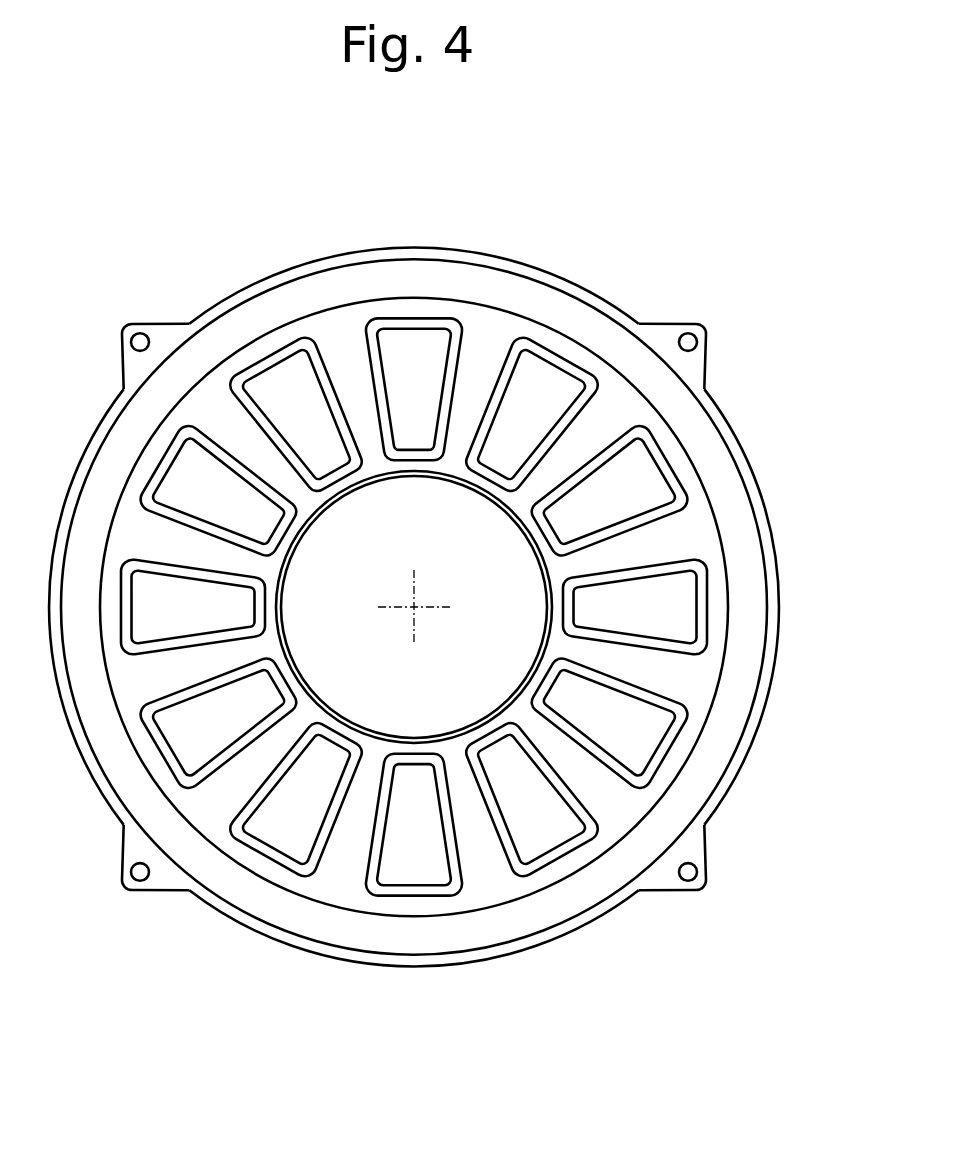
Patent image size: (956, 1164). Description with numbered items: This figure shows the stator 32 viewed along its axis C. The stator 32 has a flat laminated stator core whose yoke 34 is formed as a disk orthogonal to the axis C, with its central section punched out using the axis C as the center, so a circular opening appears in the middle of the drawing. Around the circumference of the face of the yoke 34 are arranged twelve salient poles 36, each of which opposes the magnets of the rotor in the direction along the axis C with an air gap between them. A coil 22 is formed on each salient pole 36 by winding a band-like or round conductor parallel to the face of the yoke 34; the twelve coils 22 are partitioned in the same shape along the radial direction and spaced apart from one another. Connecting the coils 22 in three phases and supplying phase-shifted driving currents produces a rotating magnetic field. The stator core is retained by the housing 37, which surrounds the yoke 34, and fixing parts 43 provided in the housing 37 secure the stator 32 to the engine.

The stator 32 is at (414, 537).
The housing 37 is at (429, 606).
The fixing part 43 is at (463, 610).
The yoke section 34 is at (484, 607).
The coil 22 is at (488, 557).
The salient pole 36 is at (479, 561).
The axis C is at (447, 601).